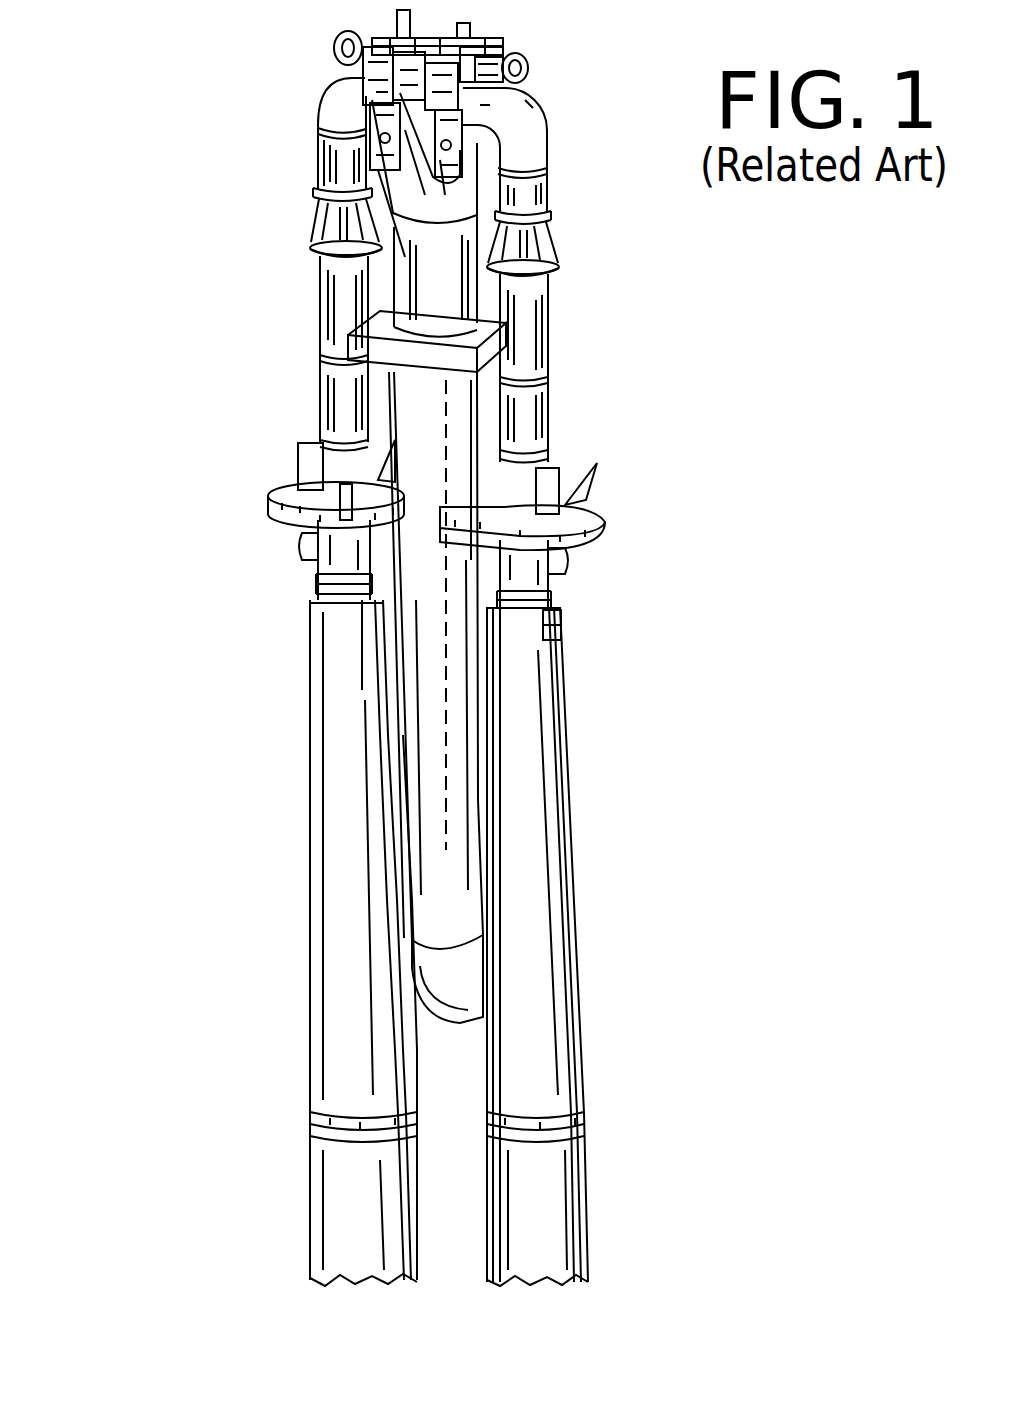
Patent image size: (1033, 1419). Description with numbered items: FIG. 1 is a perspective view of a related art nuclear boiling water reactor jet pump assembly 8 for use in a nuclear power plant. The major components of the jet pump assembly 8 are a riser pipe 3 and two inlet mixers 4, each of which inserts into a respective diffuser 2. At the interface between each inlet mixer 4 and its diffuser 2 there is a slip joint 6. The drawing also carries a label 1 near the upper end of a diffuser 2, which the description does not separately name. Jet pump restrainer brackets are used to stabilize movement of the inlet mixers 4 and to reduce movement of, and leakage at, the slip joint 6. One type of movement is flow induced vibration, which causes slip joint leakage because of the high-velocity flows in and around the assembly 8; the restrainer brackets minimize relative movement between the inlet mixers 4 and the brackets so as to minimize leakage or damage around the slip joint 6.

The jet pump assembly 8 is at (266, 223).
The inlet mixer 4 is at (525, 342).
The riser pipe 3 is at (432, 715).
The slip joint 6 is at (609, 441).
The diffuser 2 is at (533, 737).
The casing clip 1 is at (538, 640).